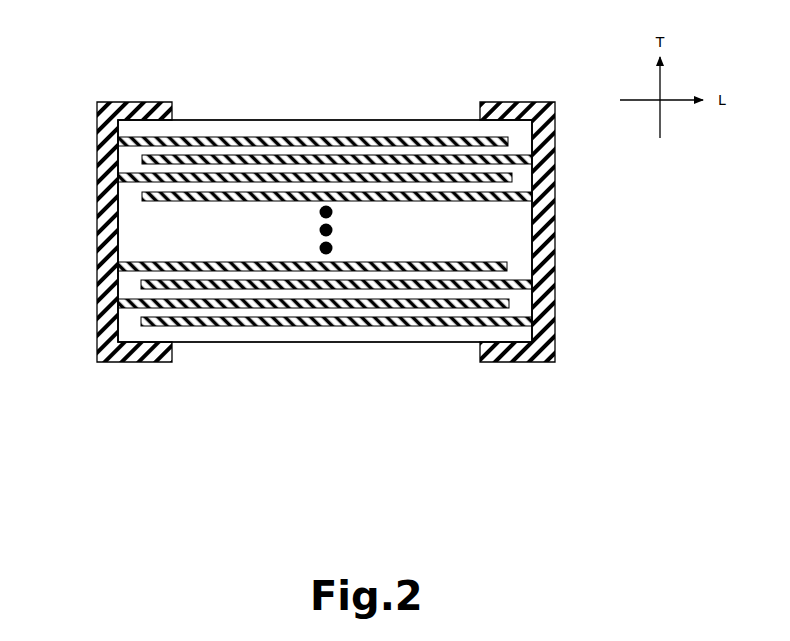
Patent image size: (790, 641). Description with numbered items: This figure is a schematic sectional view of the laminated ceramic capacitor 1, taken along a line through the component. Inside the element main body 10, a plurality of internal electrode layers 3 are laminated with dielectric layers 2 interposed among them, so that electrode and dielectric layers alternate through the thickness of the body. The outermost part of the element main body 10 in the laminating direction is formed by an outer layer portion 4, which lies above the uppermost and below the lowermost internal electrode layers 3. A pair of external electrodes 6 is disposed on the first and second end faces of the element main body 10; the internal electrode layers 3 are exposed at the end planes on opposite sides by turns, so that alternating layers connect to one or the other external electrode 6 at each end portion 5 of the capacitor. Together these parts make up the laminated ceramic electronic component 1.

The laminated ceramic capacitor 1 is at (313, 267).
The element main body 10 is at (325, 241).
The dielectric layer 2 is at (255, 187).
The internal electrode layer 3 is at (418, 272).
The outer layer portion 4 is at (420, 142).
The end portion 5 is at (313, 232).
The external electrode 6 is at (555, 140).